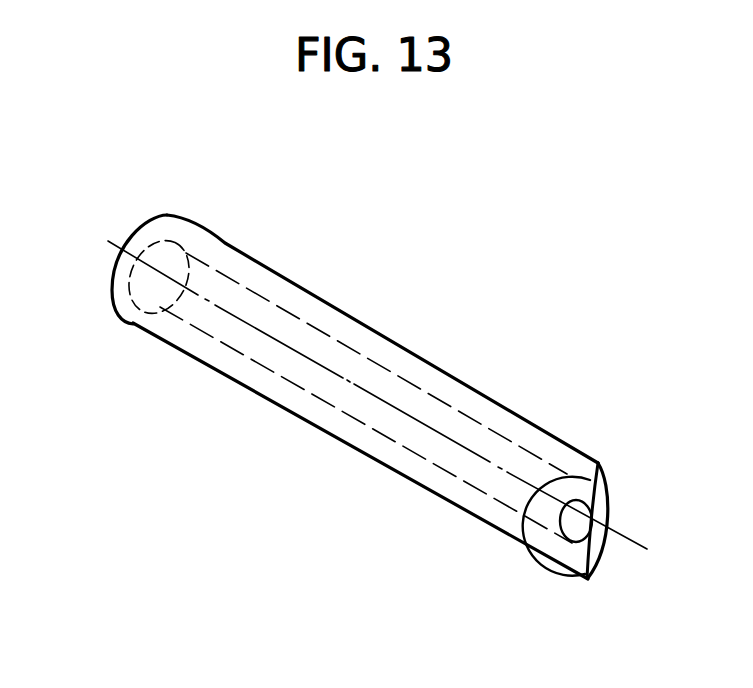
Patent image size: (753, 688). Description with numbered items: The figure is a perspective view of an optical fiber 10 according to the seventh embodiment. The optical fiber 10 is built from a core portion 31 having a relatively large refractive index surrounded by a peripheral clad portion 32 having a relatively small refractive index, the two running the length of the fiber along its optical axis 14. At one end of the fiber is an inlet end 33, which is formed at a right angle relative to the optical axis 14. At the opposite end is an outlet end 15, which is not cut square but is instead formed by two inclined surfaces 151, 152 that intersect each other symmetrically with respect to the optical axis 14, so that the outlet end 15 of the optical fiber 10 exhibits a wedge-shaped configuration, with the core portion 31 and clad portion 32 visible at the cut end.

The optical fiber 10 is at (390, 346).
The optical axis 14 is at (104, 237).
The outlet end 15 is at (611, 517).
The inlet end 33 is at (165, 213).
The inclined surface 151 is at (522, 544).
The inclined surface 152 is at (597, 482).
The core portion 31 is at (582, 540).
The clad portion 32 is at (562, 556).